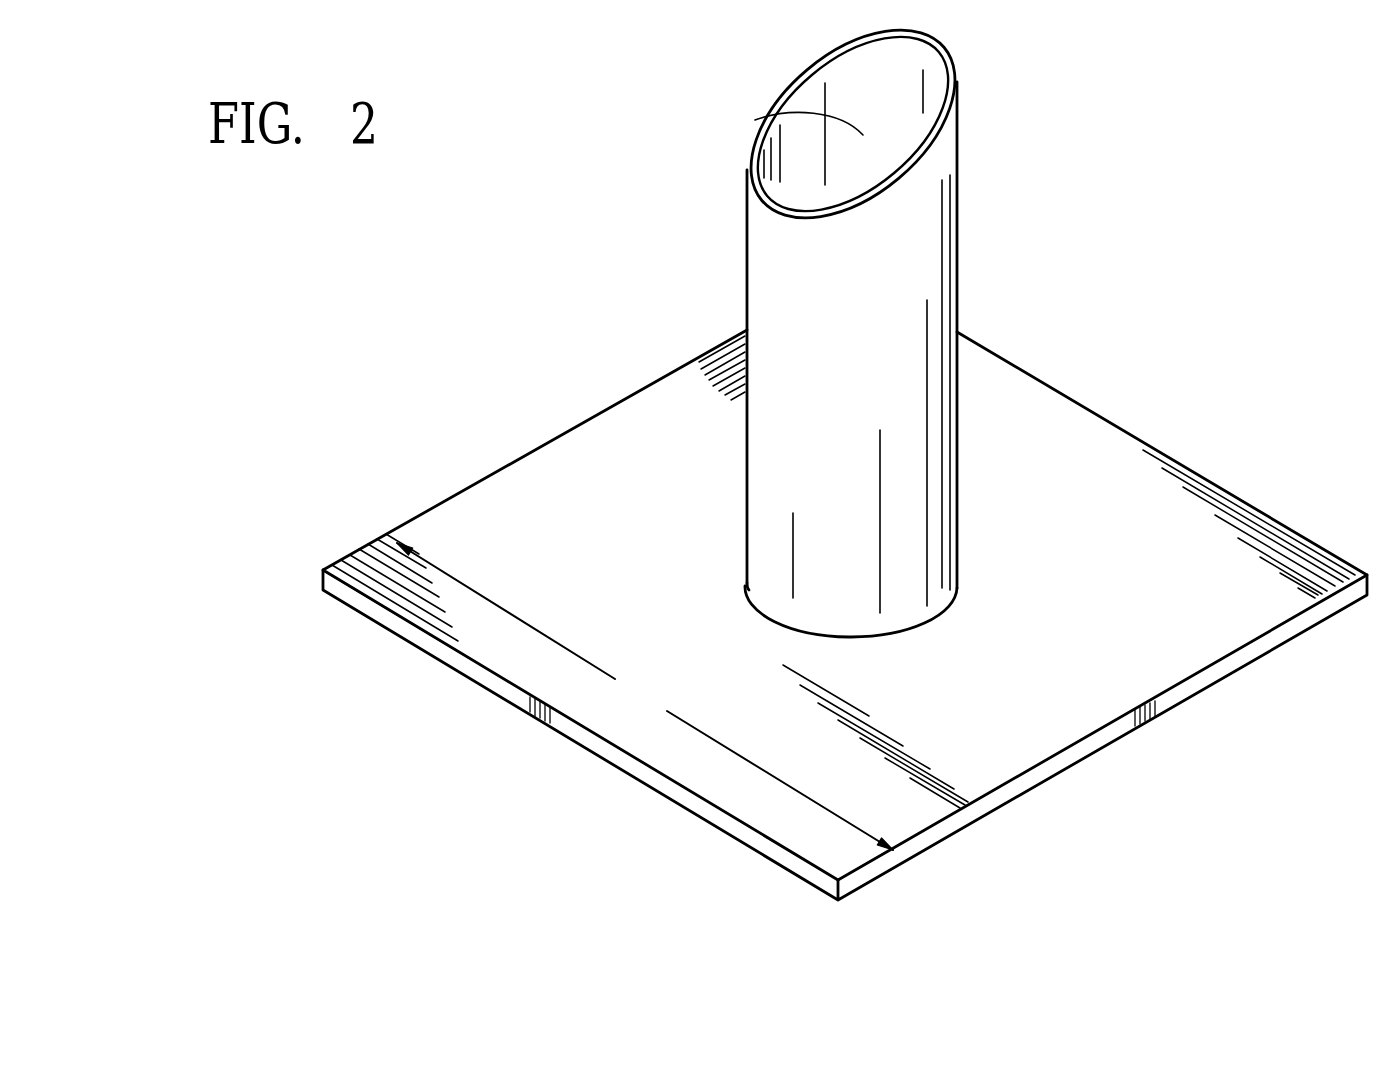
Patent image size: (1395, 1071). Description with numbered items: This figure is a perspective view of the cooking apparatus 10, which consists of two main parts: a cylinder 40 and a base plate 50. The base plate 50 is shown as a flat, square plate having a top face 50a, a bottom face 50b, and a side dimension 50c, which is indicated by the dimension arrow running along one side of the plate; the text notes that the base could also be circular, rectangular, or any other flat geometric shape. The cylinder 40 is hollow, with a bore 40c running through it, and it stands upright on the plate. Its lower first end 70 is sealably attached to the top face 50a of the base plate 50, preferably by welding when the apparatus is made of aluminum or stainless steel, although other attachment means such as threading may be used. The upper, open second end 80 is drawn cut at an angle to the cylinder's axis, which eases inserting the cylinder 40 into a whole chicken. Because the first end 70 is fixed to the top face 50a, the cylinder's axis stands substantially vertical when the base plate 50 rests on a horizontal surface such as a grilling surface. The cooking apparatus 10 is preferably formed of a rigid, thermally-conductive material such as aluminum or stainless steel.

The cooking apparatus 10 is at (1170, 316).
The cylinder 40 is at (861, 348).
The bore 40c is at (755, 120).
The base plate 50 is at (845, 615).
The top face 50a is at (535, 475).
The bottom face 50b is at (576, 750).
The side dimension 50c is at (645, 696).
The first end 70 is at (867, 637).
The second end 80 is at (957, 73).